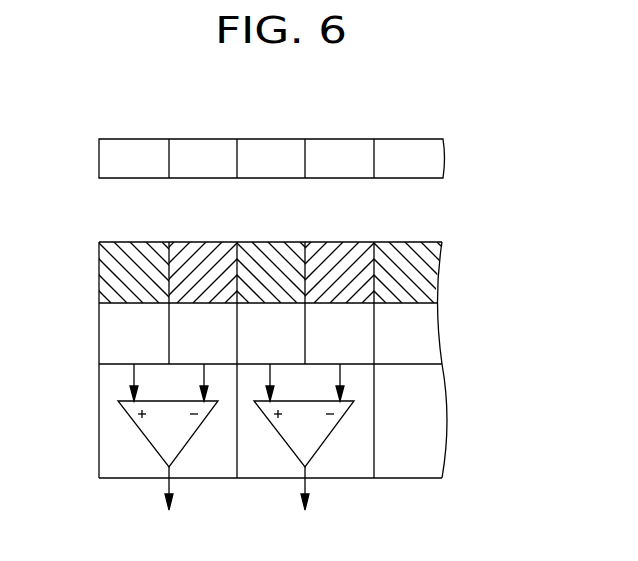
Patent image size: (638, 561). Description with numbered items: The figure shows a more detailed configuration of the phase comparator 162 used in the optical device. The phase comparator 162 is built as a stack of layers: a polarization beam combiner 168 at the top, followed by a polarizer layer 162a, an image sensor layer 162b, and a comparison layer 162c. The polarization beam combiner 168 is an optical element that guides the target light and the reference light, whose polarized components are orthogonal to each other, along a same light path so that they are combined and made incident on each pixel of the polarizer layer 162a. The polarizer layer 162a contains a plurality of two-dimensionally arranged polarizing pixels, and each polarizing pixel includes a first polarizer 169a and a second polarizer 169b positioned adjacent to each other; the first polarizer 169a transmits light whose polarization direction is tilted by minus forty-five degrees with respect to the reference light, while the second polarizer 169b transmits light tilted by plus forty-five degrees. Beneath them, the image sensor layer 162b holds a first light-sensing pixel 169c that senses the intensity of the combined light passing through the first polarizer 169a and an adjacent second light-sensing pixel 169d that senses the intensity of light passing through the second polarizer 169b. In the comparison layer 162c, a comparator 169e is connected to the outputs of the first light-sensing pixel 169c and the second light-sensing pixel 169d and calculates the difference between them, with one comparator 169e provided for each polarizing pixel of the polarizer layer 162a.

The polarization beam combiner 168 is at (445, 158).
The phase comparator 162 is at (537, 160).
The polarizer layer 162a is at (289, 249).
The image sensor layer 162b is at (271, 333).
The comparison layer 162c is at (270, 437).
The first polarizer 169a is at (130, 257).
The second polarizer 169b is at (200, 257).
The first light-sensing pixel 169c is at (113, 337).
The second light-sensing pixel 169d is at (182, 322).
The comparator 169e is at (157, 432).